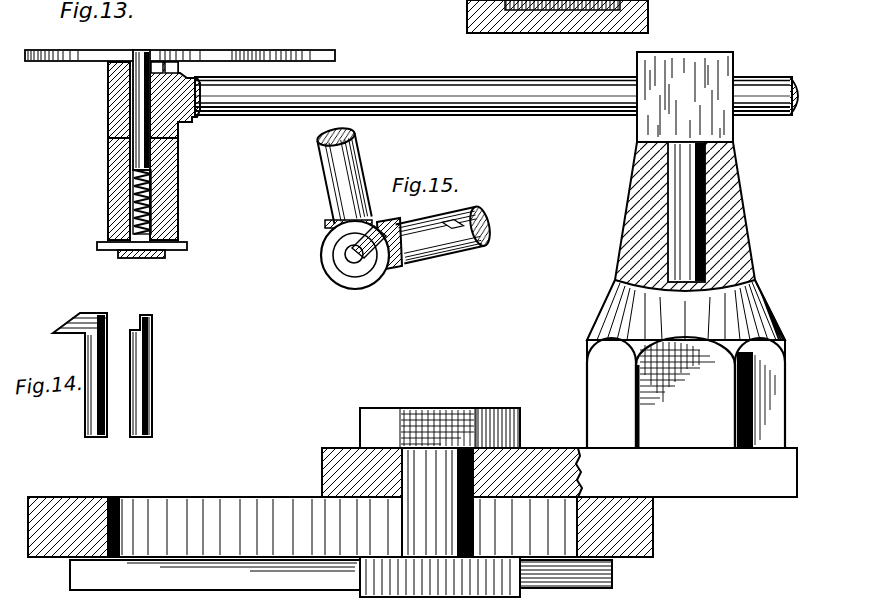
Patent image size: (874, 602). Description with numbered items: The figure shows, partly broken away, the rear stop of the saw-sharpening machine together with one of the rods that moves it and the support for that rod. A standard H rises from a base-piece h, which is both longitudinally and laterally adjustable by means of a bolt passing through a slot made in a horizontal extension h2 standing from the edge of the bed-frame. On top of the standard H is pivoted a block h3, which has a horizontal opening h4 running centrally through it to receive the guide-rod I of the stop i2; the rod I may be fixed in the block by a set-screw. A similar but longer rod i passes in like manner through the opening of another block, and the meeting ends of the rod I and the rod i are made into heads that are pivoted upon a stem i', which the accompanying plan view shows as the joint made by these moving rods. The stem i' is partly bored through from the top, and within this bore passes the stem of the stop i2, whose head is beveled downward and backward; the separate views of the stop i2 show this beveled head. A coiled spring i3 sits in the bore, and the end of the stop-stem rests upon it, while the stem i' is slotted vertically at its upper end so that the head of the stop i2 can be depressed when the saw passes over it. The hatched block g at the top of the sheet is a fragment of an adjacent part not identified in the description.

In FIG. 13, the rod i is at (175, 151).
In FIG. 15, the rod i is at (404, 194).
In FIG. 13, the stem i' is at (107, 151).
In FIG. 13, the rear stop i2 is at (142, 98).
In FIG. 15, the rear stop i2 is at (354, 254).
In FIG. 14, the rear stop i2 is at (109, 366).
In FIG. 13, the coiled spring i3 is at (165, 216).
In FIG. 13, the guide-rod I is at (496, 86).
In FIG. 13, the block g is at (566, 16).
In FIG. 13, the base-piece h is at (559, 463).
In FIG. 13, the beam h' is at (340, 527).
In FIG. 13, the horizontal extension h2 is at (340, 518).
In FIG. 13, the block h3 is at (685, 97).
In FIG. 13, the horizontal opening h4 is at (733, 77).
In FIG. 13, the standard H is at (686, 295).